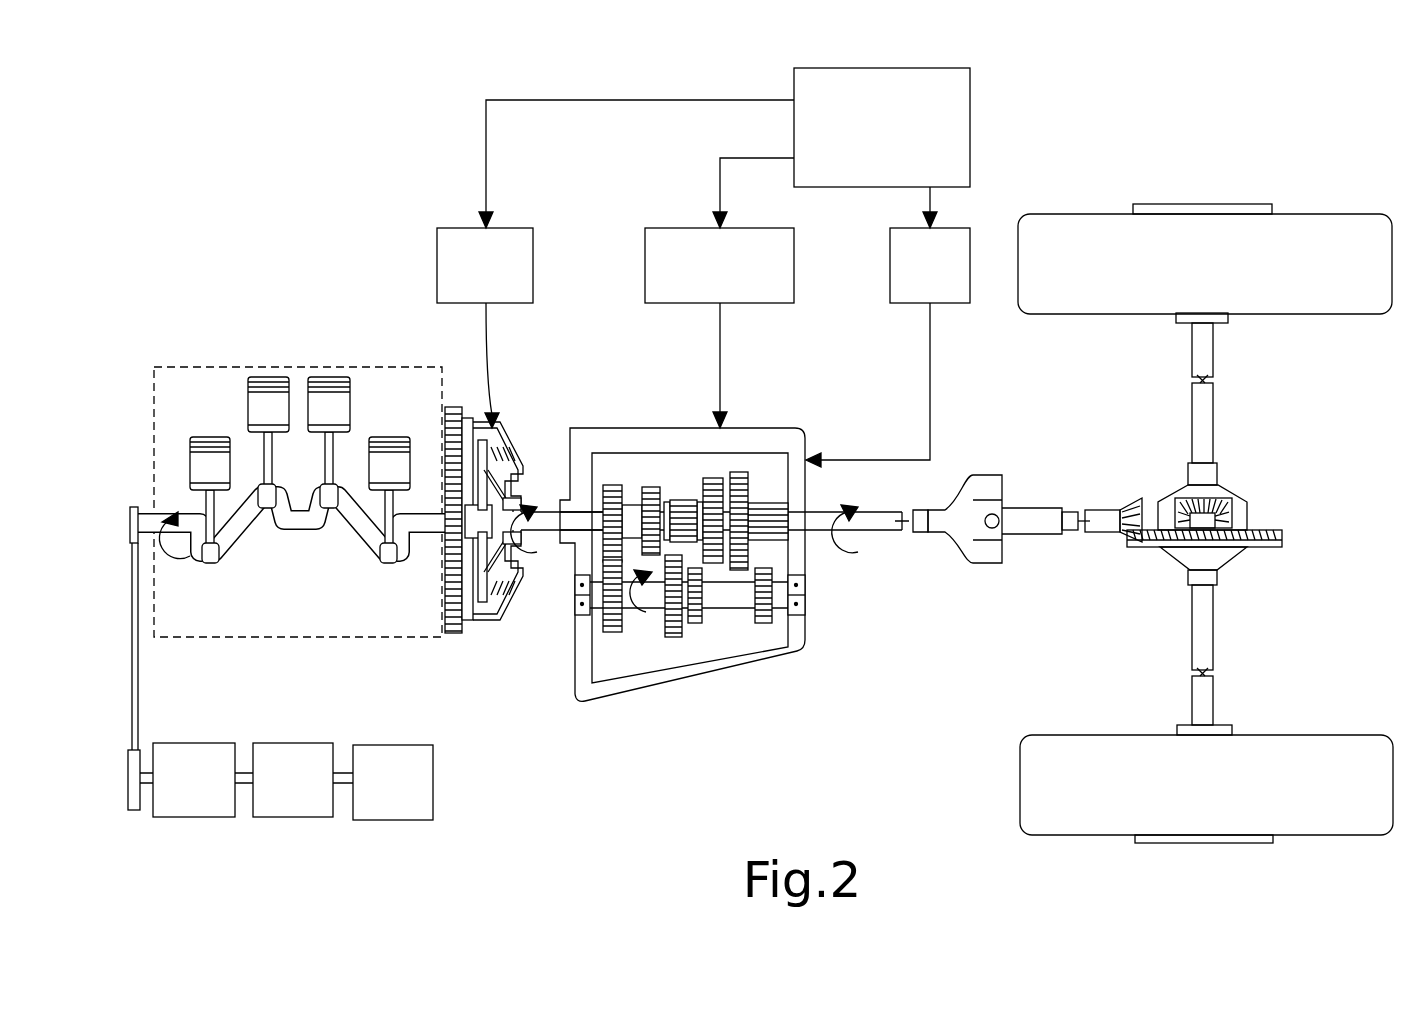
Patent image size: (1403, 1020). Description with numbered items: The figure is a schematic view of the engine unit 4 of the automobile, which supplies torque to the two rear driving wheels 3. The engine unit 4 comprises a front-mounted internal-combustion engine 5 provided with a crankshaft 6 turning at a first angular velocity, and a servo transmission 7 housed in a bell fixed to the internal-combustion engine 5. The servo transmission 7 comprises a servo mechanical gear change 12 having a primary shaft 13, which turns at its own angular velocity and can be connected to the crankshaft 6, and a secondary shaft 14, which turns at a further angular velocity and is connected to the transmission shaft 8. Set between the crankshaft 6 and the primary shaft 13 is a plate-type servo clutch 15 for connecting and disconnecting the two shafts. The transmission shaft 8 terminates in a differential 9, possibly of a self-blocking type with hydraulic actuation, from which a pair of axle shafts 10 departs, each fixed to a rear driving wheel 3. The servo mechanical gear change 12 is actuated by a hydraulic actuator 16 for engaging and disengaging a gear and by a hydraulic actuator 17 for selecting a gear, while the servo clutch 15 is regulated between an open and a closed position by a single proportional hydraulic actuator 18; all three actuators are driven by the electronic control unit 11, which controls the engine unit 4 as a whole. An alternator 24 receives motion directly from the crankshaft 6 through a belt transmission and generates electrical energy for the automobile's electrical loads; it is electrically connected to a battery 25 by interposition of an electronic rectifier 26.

The rear driving wheels 3 is at (1045, 250).
The engine unit 4 is at (1164, 462).
The internal-combustion engine 5 is at (295, 540).
The crankshaft 6 is at (358, 522).
The servo transmission 7 is at (524, 640).
The transmission shaft 8 is at (883, 522).
The differential 9 is at (1262, 545).
The axle shafts 10 is at (1205, 433).
The electronic control unit 11 is at (882, 127).
The servo mechanical gear change 12 is at (731, 624).
The primary shaft 13 is at (780, 645).
The secondary shaft 14 is at (770, 527).
The plate-type servo clutch 15 is at (484, 622).
The hydraulic actuator 16 is at (719, 293).
The hydraulic actuator 17 is at (888, 327).
The proportional hydraulic actuator 18 is at (615, 264).
The alternator 24 is at (194, 780).
The battery 25 is at (393, 782).
The electronic rectifier 26 is at (293, 780).